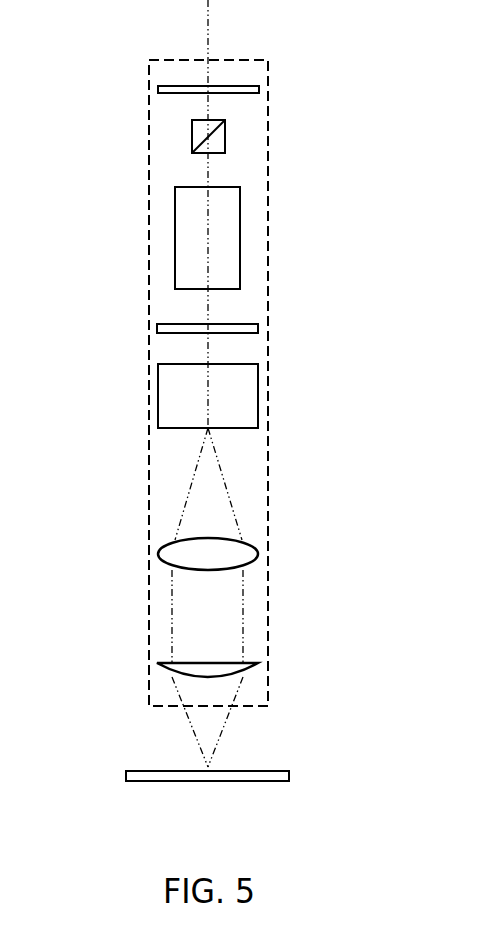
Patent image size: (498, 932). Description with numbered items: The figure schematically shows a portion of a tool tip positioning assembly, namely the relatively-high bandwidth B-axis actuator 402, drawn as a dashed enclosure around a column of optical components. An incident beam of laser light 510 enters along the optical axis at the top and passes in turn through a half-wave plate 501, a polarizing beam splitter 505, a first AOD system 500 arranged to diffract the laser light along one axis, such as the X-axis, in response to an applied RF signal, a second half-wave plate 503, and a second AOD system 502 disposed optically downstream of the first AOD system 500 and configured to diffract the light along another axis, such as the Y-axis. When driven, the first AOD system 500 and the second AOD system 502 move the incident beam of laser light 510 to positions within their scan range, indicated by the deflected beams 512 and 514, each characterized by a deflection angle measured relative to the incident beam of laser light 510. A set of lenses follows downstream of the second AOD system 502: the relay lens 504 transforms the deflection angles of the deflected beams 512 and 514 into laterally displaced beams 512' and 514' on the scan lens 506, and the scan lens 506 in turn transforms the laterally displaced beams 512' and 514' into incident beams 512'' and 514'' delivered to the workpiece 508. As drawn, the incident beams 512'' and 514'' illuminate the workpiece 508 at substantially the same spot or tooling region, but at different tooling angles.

The relatively-high bandwidth B-axis actuator 402 is at (148, 86).
The incident beam of laser light 510 is at (210, 30).
The half-wave plate 501 is at (259, 88).
The polarizing beam splitter 505 is at (226, 140).
The first AOD system 500 is at (240, 255).
The half-wave plate 503 is at (258, 328).
The second AOD system 502 is at (258, 392).
The deflected beam 512 is at (156, 484).
The deflected beam 514 is at (140, 488).
The relay lens 504 is at (256, 552).
The laterally displaced beam 512' is at (282, 616).
The laterally displaced beam 514' is at (133, 616).
The scan lens 506 is at (256, 663).
The incident beam 512'' is at (256, 722).
The incident beam 514'' is at (154, 722).
The workpiece 508 is at (282, 770).